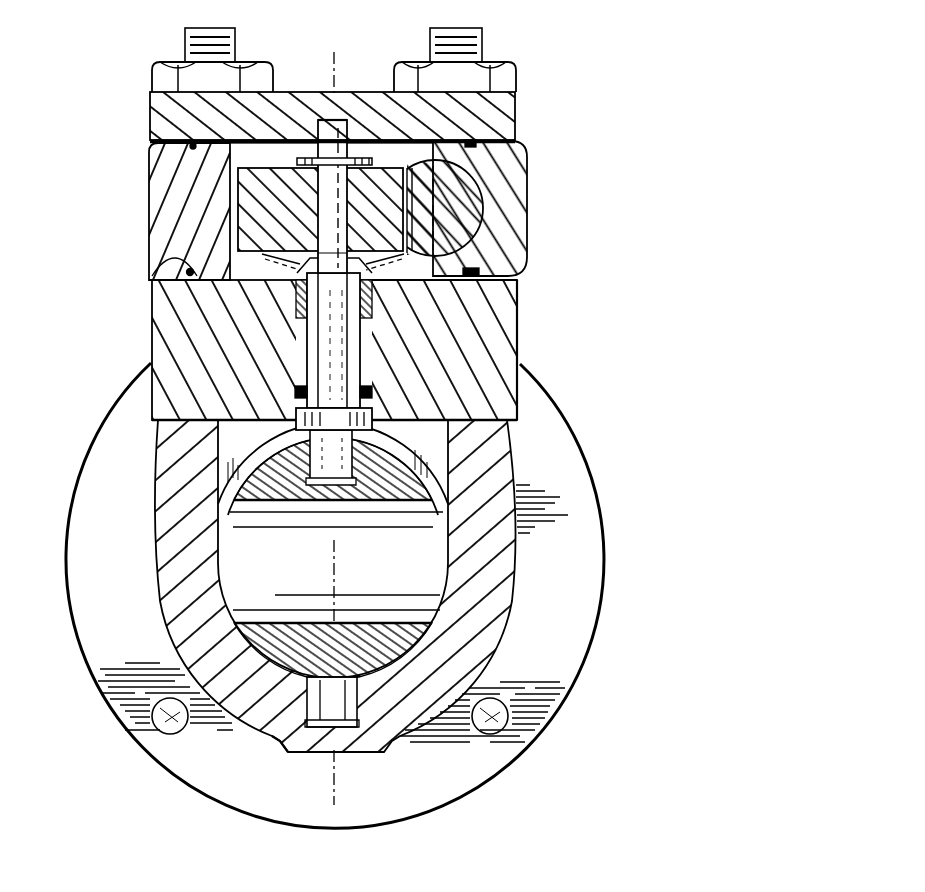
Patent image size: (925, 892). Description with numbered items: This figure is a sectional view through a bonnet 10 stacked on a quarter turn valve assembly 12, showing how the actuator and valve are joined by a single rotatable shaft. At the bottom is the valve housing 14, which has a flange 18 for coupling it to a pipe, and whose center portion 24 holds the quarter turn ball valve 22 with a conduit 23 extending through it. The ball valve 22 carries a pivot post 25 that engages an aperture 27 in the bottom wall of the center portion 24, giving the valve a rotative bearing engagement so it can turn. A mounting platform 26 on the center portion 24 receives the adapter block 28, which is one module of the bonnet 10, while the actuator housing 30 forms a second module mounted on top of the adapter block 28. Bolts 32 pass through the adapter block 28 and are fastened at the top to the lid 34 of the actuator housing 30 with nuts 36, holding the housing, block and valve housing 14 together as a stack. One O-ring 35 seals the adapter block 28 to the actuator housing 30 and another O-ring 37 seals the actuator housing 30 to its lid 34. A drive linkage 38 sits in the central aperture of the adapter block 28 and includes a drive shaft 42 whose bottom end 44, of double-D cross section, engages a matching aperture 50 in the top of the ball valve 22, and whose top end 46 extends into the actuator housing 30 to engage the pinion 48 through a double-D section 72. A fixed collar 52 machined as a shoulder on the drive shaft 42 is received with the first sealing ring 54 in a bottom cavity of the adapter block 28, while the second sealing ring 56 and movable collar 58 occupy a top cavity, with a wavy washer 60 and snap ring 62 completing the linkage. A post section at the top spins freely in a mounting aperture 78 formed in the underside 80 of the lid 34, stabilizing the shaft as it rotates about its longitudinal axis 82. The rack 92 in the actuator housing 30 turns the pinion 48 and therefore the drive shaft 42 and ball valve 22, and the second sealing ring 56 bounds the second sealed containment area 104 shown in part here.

The bonnet 10 is at (553, 123).
The quarter turn valve assembly 12 is at (613, 547).
The valve housing 14 is at (521, 550).
The flange 18 is at (553, 680).
The quarter turn ball valve 22 is at (168, 457).
The conduit 23 is at (406, 500).
The center portion 24 is at (163, 570).
The pivot post 25 is at (387, 737).
The mounting platform 26 is at (490, 415).
The aperture 27 is at (268, 733).
The adapter block 28 is at (166, 345).
The actuator housing 30 is at (118, 199).
The bolts 32 is at (187, 39).
The lid 34 is at (152, 116).
The O-ring 35 is at (160, 142).
The nuts 36 is at (163, 73).
The O-ring 37 is at (152, 256).
The drive linkage 38 is at (390, 298).
The drive shaft 42 is at (496, 352).
The bottom end 44 is at (280, 450).
The top end 46 is at (353, 158).
The pinion 48 is at (182, 229).
The aperture 50 is at (350, 482).
The fixed collar 52 is at (376, 419).
The first sealing ring 54 is at (366, 396).
The second sealing ring 56 is at (306, 368).
The movable collar 58 is at (292, 281).
The wavy washer 60 is at (297, 283).
The snap ring 62 is at (318, 138).
The double-D section 72 is at (248, 221).
The mounting aperture 78 is at (322, 124).
The underside 80 is at (378, 148).
The longitudinal axis 82 is at (336, 63).
The rack 92 is at (468, 208).
The second sealed containment area 104 is at (257, 153).